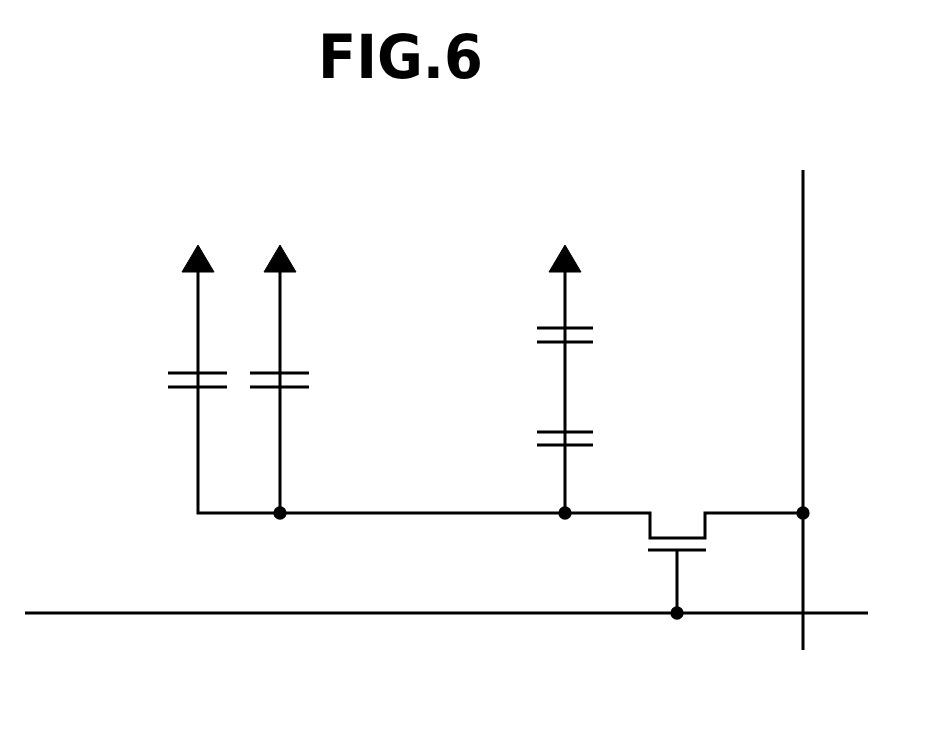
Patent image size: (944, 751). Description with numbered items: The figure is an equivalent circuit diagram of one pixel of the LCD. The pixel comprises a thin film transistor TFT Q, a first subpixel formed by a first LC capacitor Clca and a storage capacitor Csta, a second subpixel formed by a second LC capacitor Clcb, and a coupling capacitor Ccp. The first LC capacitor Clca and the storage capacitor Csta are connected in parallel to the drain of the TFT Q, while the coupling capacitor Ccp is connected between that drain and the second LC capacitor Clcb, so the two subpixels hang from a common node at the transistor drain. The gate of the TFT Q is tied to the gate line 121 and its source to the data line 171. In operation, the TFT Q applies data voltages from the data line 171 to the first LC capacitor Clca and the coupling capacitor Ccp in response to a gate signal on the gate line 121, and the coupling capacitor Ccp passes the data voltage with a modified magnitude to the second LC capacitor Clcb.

The data line 171 is at (803, 373).
The gate line 121 is at (405, 615).
The first LC capacitor Clca is at (161, 382).
The storage capacitor Csta is at (317, 392).
The second LC capacitor Clcb is at (526, 392).
The coupling capacitor Ccp is at (530, 436).
The TFT Q is at (677, 547).